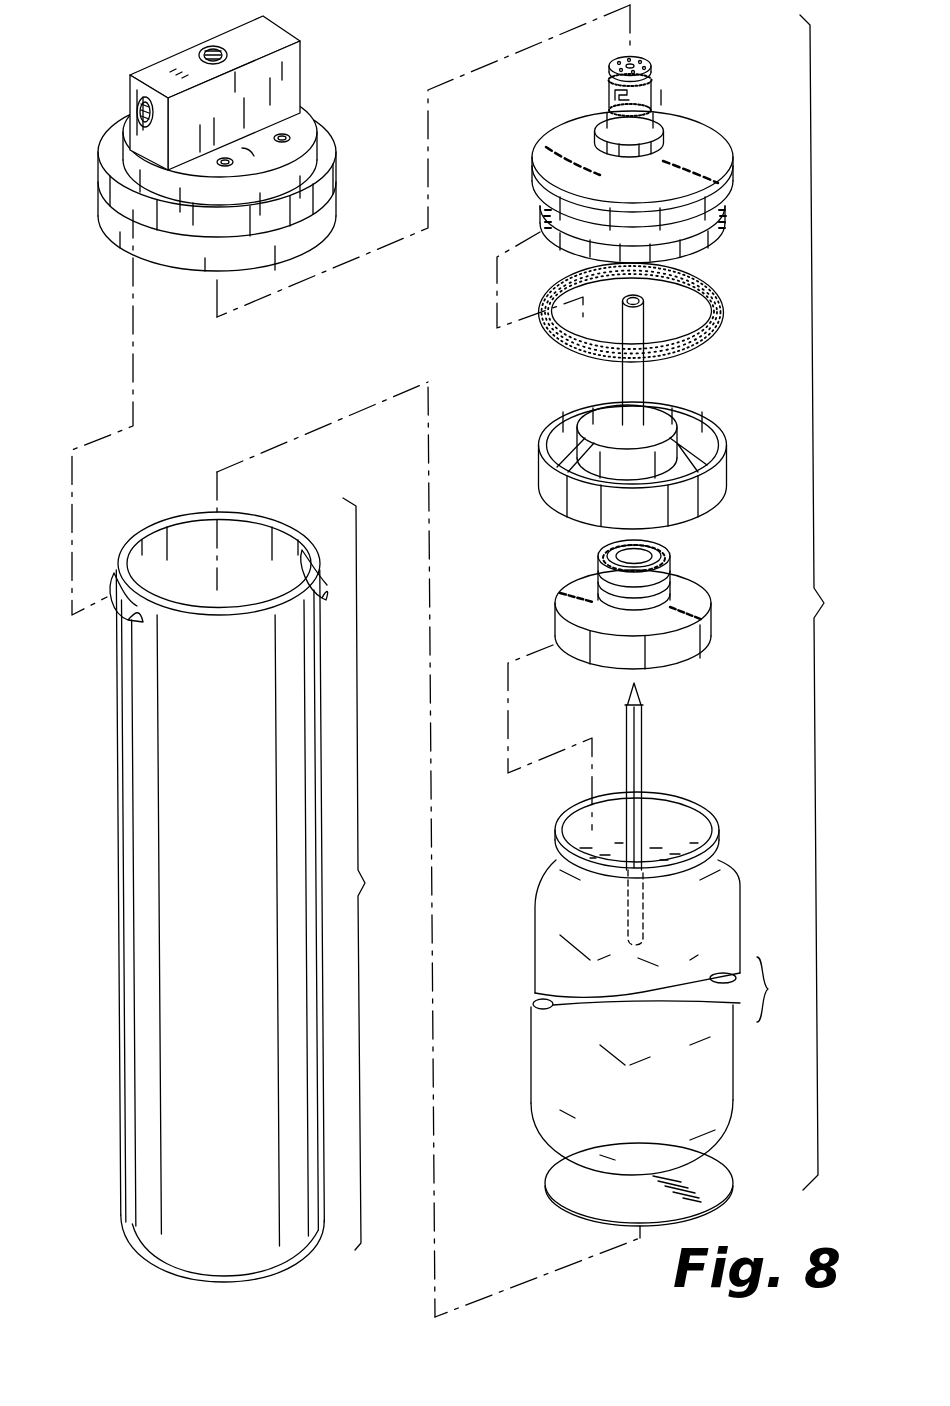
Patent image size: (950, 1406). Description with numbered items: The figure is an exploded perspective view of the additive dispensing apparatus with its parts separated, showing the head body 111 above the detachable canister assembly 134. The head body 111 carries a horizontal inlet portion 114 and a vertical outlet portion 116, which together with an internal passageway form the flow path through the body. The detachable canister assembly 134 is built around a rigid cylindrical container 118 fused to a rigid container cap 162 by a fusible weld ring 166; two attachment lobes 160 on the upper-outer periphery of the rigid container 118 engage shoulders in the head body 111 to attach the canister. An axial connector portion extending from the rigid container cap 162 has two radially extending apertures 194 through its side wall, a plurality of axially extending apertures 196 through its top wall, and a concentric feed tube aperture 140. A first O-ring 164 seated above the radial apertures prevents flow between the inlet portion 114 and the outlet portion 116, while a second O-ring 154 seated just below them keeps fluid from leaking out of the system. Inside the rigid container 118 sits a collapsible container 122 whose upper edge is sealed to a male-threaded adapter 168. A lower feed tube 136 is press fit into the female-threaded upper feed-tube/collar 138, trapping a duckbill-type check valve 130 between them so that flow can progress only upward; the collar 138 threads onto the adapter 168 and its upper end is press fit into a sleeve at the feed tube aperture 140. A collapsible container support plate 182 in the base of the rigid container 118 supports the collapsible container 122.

The head body 111 is at (337, 202).
The inlet portion 114 is at (136, 112).
The outlet portion 116 is at (200, 53).
The rigid cylindrical container 118 is at (292, 1227).
The collapsible container 122 is at (540, 932).
The duckbill-type check valve 130 is at (648, 693).
The detachable canister assembly 134 is at (596, 632).
The lower feed tube 136 is at (643, 750).
The upper feed-tube/collar 138 is at (655, 380).
The feed tube aperture 140 is at (633, 56).
The second O-ring 154 is at (653, 109).
The attachment lobes 160 is at (108, 598).
The rigid container cap 162 is at (550, 167).
The first O-ring 164 is at (652, 69).
The fusible weld ring 166 is at (555, 340).
The male-threaded adapter 168 is at (575, 588).
The collapsible container support plate 182 is at (557, 1183).
The radially extending apertures 194 is at (607, 101).
The axially extending apertures 196 is at (608, 64).